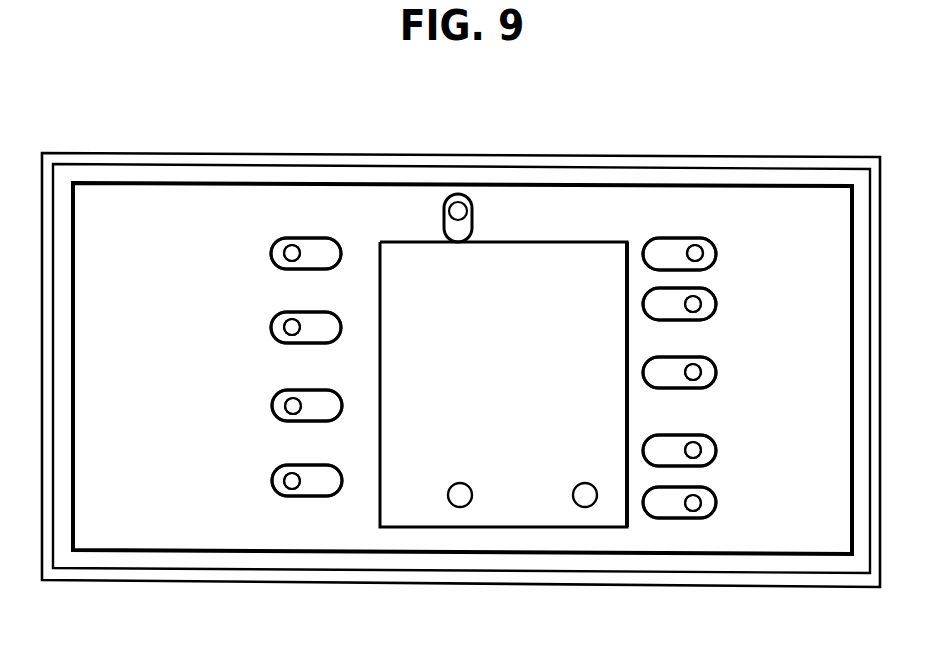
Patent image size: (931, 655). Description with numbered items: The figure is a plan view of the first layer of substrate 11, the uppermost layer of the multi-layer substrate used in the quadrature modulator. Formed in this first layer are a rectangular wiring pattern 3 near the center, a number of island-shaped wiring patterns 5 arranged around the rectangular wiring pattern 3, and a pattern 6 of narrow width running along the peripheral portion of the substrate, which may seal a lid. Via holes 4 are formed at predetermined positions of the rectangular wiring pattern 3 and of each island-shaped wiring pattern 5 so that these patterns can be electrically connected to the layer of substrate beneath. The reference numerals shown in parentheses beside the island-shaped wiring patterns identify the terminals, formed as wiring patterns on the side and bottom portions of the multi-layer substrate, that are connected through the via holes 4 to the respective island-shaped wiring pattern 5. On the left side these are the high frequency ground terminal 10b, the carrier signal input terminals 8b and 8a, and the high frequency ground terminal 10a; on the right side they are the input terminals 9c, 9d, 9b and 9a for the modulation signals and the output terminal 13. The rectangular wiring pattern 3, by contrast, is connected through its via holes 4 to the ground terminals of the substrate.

The first layer of substrate 11 is at (227, 107).
The pattern having a narrow width 6 is at (720, 170).
The rectangular wiring pattern 3 is at (576, 258).
The via holes 4 is at (449, 214).
The island-shaped wiring patterns 5 is at (468, 235).
The high frequency ground terminal 10b is at (273, 253).
The carrier signal input terminal 8b is at (278, 327).
The carrier signal input terminal 8a is at (279, 405).
The high frequency ground terminal 10a is at (272, 480).
The input terminal for modulation signal 9c is at (704, 254).
The input terminal for modulation signal 9d is at (704, 304).
The output terminal 13 is at (704, 372).
The input terminal for modulation signal 9b is at (704, 450).
The input terminal for modulation signal 9a is at (704, 502).